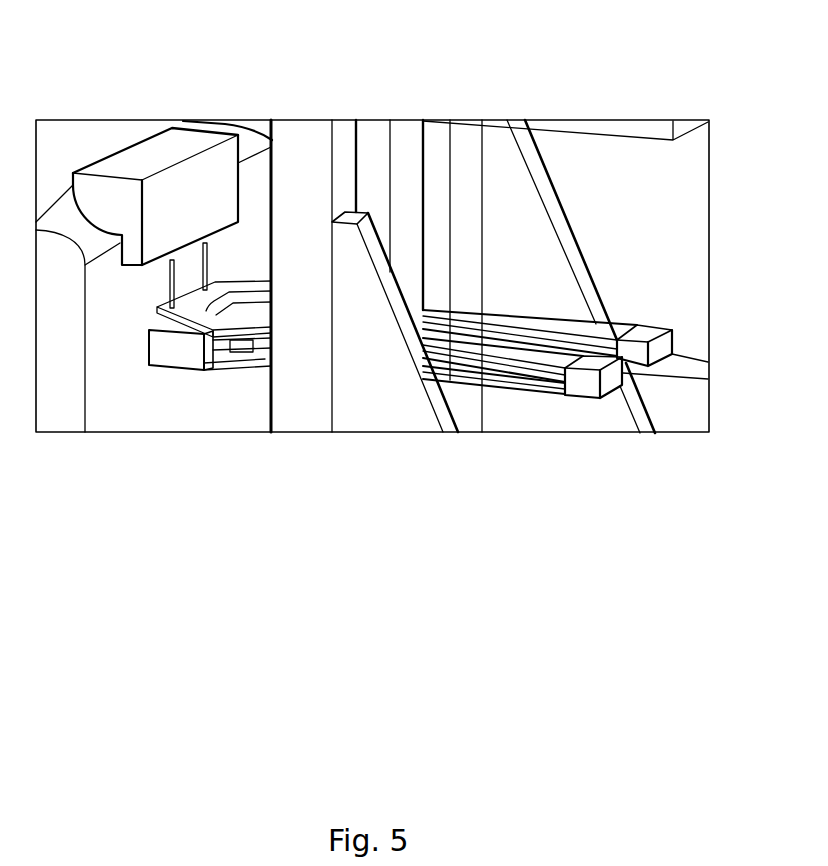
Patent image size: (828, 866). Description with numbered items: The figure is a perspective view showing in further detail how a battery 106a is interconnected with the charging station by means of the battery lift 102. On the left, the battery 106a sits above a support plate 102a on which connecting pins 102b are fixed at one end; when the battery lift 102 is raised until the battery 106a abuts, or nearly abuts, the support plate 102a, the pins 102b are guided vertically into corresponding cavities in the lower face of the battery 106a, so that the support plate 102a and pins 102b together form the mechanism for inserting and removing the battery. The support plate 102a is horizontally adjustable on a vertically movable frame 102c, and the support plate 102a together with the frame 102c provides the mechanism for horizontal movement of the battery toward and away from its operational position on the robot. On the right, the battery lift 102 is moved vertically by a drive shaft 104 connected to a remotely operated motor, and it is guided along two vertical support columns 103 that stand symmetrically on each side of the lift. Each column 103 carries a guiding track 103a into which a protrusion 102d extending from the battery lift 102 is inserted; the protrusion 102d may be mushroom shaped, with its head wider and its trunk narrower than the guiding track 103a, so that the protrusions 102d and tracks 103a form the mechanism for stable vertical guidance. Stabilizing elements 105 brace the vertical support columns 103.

The battery lift 102 is at (632, 300).
The support plate 102a is at (197, 331).
The connecting pins 102b is at (196, 250).
The vertically movable frame 102c is at (456, 367).
The protrusion 102d is at (467, 318).
The vertical support columns 103 is at (304, 140).
The guiding track 103a is at (440, 152).
The drive shaft 104 is at (403, 145).
The stabilizing elements 105 is at (398, 393).
The battery 106a is at (123, 163).